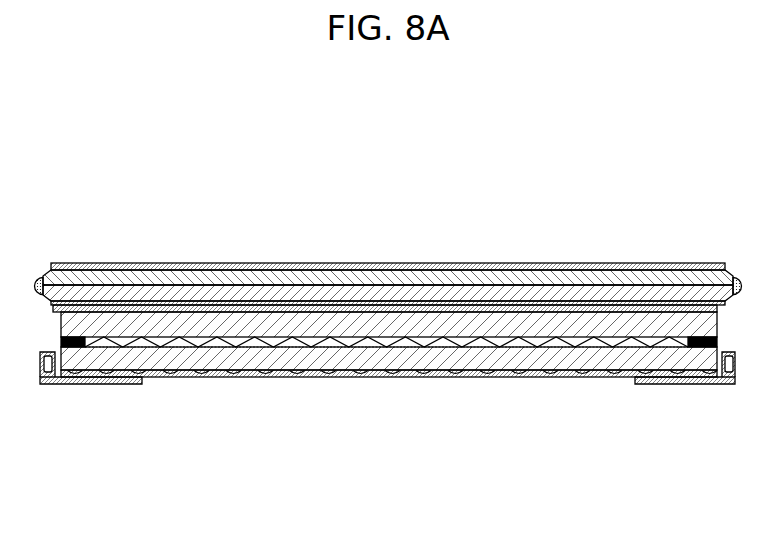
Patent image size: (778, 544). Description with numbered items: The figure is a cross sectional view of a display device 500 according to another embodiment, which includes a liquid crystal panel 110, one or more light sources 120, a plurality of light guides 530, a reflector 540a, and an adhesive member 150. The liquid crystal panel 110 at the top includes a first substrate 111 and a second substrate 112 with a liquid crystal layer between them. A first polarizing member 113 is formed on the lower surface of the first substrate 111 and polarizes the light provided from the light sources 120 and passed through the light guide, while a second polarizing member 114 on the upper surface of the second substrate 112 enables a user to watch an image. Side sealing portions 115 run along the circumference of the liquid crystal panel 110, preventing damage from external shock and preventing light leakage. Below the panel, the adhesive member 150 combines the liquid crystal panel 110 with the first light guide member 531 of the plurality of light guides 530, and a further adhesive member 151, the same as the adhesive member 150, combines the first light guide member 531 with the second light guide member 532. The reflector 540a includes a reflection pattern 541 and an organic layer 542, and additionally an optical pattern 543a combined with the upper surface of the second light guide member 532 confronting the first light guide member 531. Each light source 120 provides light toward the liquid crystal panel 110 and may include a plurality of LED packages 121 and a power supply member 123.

The display device 500 is at (96, 152).
The liquid crystal panel 110 is at (507, 188).
The first substrate 111 is at (365, 293).
The second substrate 112 is at (403, 278).
The first polarizing member 113 is at (452, 302).
The second polarizing member 114 is at (500, 263).
The side sealing portion 115 is at (743, 282).
The adhesive member 150 is at (678, 310).
The adhesive member 151 is at (719, 341).
The plurality of light guides 530 is at (372, 436).
The first light guide member 531 is at (307, 325).
The second light guide member 532 is at (362, 353).
The reflector 540a is at (417, 436).
The reflection pattern 541 is at (420, 370).
The organic layer 542 is at (497, 378).
The optical pattern 543a is at (565, 347).
The light source 120 is at (670, 454).
The LED package 121 is at (725, 385).
The power supply member 123 is at (677, 385).